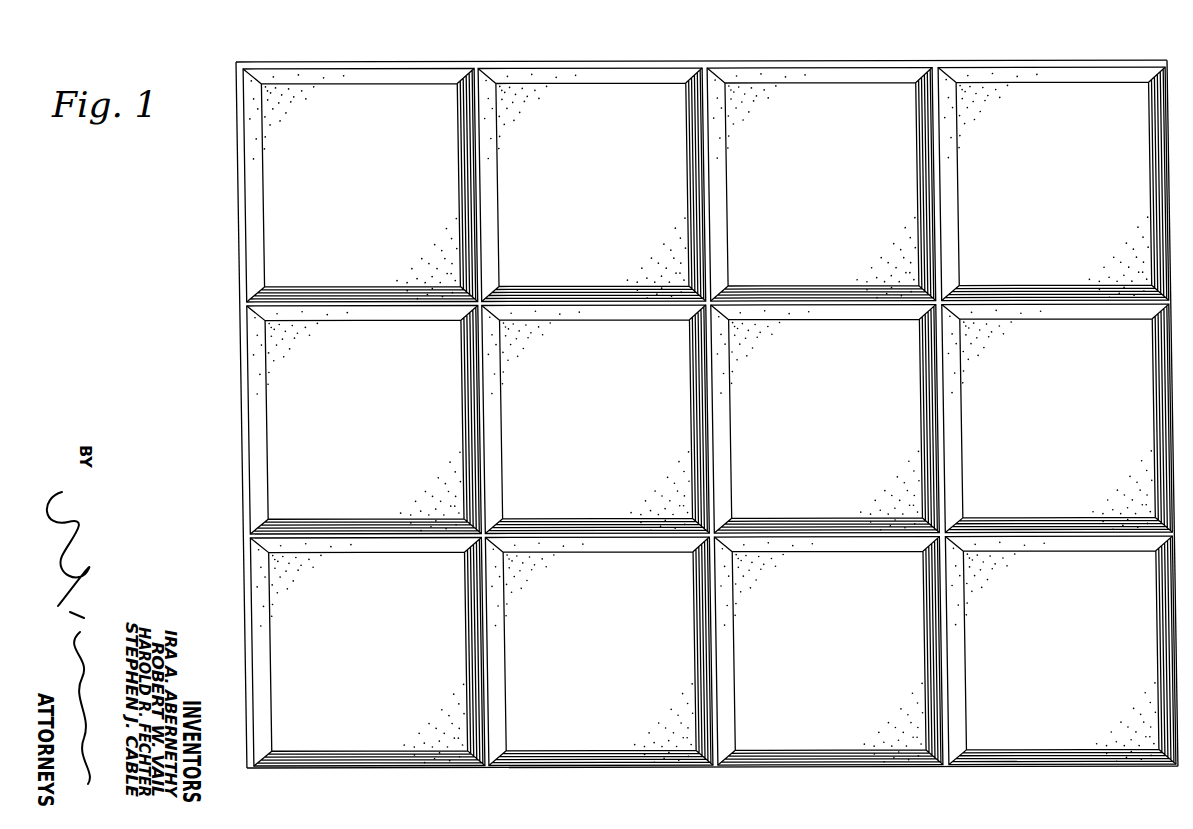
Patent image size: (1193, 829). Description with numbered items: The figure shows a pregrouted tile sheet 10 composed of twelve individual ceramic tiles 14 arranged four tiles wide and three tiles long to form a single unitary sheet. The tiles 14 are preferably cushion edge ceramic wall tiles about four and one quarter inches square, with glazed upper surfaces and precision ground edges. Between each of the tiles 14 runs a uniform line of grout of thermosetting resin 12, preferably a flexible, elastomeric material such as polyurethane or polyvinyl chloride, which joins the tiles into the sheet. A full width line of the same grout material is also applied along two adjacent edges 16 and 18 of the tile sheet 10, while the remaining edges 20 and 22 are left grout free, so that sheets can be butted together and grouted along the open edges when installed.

The pregrouted tile sheet 10 is at (888, 47).
The line of grout of thermosetting resin 12 is at (591, 304).
The ceramic tiles 14 is at (527, 93).
The edge of the tile sheet 16 is at (627, 61).
The edge of the tile sheet 18 is at (240, 238).
The edge of the tile sheet 20 is at (774, 765).
The edge of the tile sheet 22 is at (1171, 79).